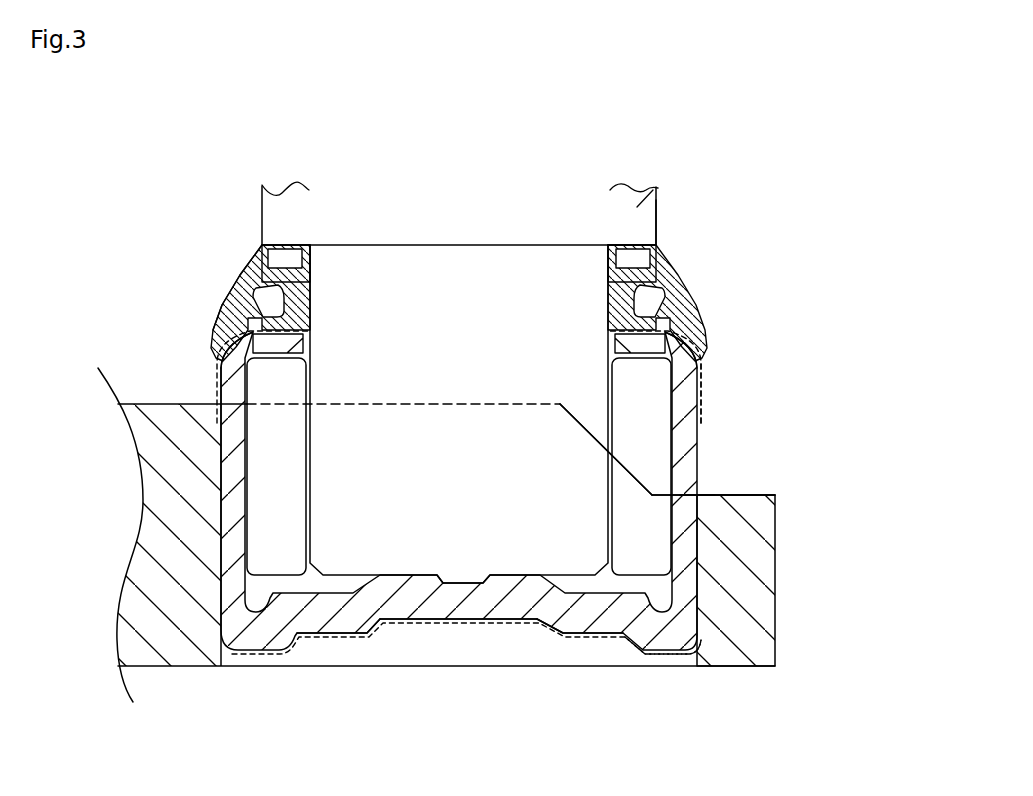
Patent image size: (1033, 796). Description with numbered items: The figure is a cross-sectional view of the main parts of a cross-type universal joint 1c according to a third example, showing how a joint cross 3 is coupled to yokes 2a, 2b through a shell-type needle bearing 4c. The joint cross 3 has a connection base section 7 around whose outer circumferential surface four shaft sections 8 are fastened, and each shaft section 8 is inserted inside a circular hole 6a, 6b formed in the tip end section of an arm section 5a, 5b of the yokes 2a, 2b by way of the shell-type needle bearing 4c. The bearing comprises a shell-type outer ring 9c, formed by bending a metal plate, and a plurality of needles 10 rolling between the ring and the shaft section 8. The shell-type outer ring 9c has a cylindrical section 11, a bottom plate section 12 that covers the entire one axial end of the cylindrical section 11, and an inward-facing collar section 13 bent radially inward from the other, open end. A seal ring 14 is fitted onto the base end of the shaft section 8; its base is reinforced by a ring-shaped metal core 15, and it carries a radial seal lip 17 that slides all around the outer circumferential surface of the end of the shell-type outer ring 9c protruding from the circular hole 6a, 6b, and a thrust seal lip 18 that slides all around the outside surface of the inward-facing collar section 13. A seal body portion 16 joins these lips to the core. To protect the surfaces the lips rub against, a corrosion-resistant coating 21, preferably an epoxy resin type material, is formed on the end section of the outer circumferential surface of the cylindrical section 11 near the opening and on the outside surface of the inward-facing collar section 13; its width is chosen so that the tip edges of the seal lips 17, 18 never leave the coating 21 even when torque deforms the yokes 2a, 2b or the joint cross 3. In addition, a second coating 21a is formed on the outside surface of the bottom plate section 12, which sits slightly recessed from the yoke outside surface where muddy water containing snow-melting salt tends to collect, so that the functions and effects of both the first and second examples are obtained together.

The cross-type universal joint 1c is at (459, 190).
The joint cross 3 is at (658, 188).
The connection base section 7 is at (642, 238).
The inward-facing collar section 13 is at (665, 331).
The seal ring 14 is at (277, 224).
The metal core 15 is at (281, 262).
The seal body 16 is at (249, 283).
The radial seal lip 17 is at (239, 267).
The thrust seal lip 18 is at (272, 312).
The corrosion-resistant coating 21 is at (702, 405).
The needles 10 is at (275, 473).
The cylindrical section 11 is at (688, 496).
The shaft section 8 is at (523, 543).
The arm section 5a is at (767, 580).
The arm section 5b is at (750, 587).
The yoke 2a is at (407, 535).
The yoke 2b is at (137, 594).
The circular hole 6a is at (452, 532).
The circular hole 6b is at (452, 532).
The shell-type outer ring 9c is at (365, 608).
The bottom plate section 12 is at (463, 604).
The shell-type needle bearing 4c is at (516, 632).
The corrosion-resistant coating 21a is at (563, 640).